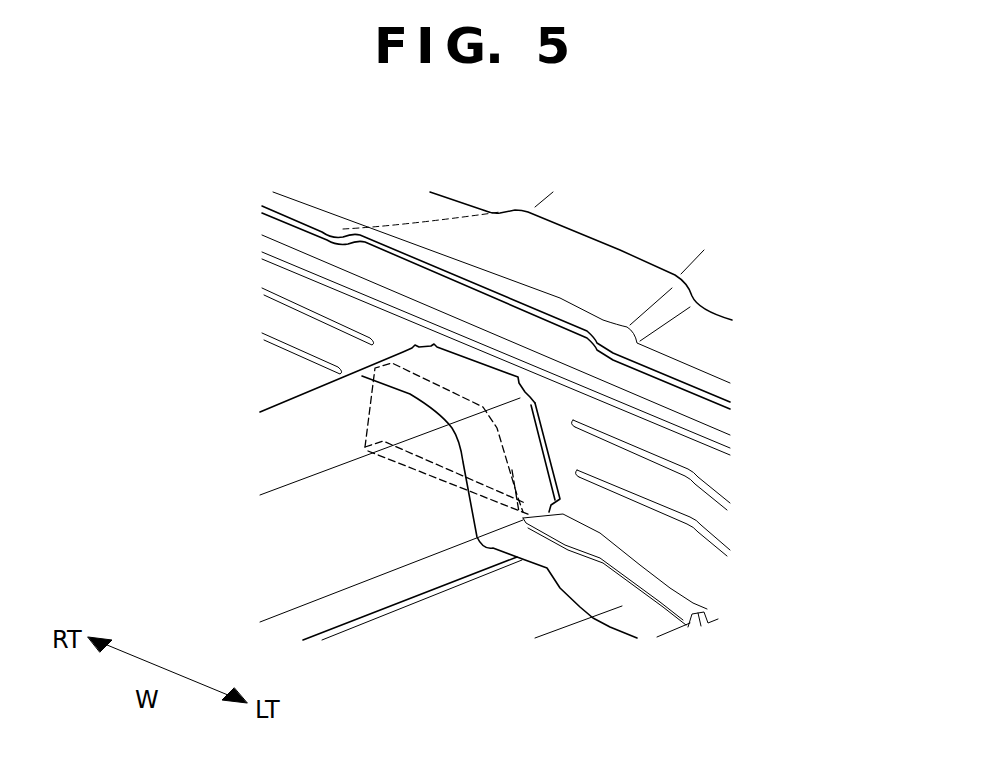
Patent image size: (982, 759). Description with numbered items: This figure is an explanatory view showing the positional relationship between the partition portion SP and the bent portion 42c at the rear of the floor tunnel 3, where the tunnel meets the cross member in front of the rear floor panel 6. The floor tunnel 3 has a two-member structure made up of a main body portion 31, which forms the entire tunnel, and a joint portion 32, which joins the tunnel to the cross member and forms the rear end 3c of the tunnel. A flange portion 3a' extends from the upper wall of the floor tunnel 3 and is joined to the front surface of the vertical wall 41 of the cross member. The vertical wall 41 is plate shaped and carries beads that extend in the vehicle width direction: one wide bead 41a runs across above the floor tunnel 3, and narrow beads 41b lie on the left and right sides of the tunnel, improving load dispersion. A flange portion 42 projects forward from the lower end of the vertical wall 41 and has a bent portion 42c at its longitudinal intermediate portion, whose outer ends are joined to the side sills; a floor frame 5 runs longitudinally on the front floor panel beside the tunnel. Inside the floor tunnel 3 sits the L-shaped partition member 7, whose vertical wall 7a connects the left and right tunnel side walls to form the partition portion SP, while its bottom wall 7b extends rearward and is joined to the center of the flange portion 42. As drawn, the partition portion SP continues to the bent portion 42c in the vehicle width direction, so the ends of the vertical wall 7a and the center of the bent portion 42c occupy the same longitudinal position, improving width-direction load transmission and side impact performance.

The floor tunnel 3 is at (296, 383).
The main body portion 31 is at (290, 412).
The joint portion 32 is at (438, 368).
The flange portion 3a' is at (562, 440).
The rear end 3c is at (538, 386).
The vertical wall 41 is at (380, 273).
The wide bead 41a is at (717, 430).
The narrow beads 41b is at (262, 288).
The flange portion 42 is at (673, 597).
The bent portion 42c is at (598, 573).
The floor frame 5 is at (718, 619).
The rear floor panel 6 is at (623, 268).
The partition member 7 is at (411, 482).
The vertical wall 7a is at (513, 468).
The bottom wall 7b is at (460, 490).
The partition portion SP is at (365, 433).